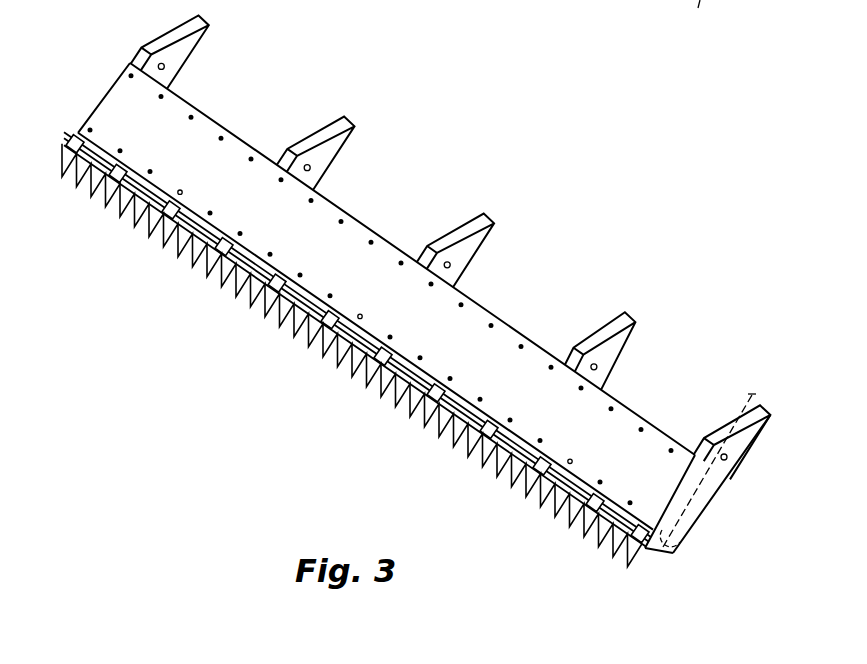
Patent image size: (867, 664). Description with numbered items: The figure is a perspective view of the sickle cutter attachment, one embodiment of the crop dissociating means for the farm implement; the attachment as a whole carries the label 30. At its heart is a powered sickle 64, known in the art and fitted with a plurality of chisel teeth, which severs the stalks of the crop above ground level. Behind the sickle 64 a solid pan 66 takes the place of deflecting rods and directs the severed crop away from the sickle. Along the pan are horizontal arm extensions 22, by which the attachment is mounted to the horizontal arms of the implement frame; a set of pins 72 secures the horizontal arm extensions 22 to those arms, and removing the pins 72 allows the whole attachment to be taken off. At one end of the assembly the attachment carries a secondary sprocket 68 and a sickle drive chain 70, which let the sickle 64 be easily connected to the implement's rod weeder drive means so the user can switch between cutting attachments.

The horizontal arm extensions 22 is at (789, 378).
The cutter bar assembly 30 is at (694, 23).
The powered sickle 64 is at (363, 380).
The solid pan 66 is at (463, 362).
The secondary sprocket 68 is at (681, 535).
The sickle drive chain 70 is at (719, 490).
The pins 72 is at (792, 452).